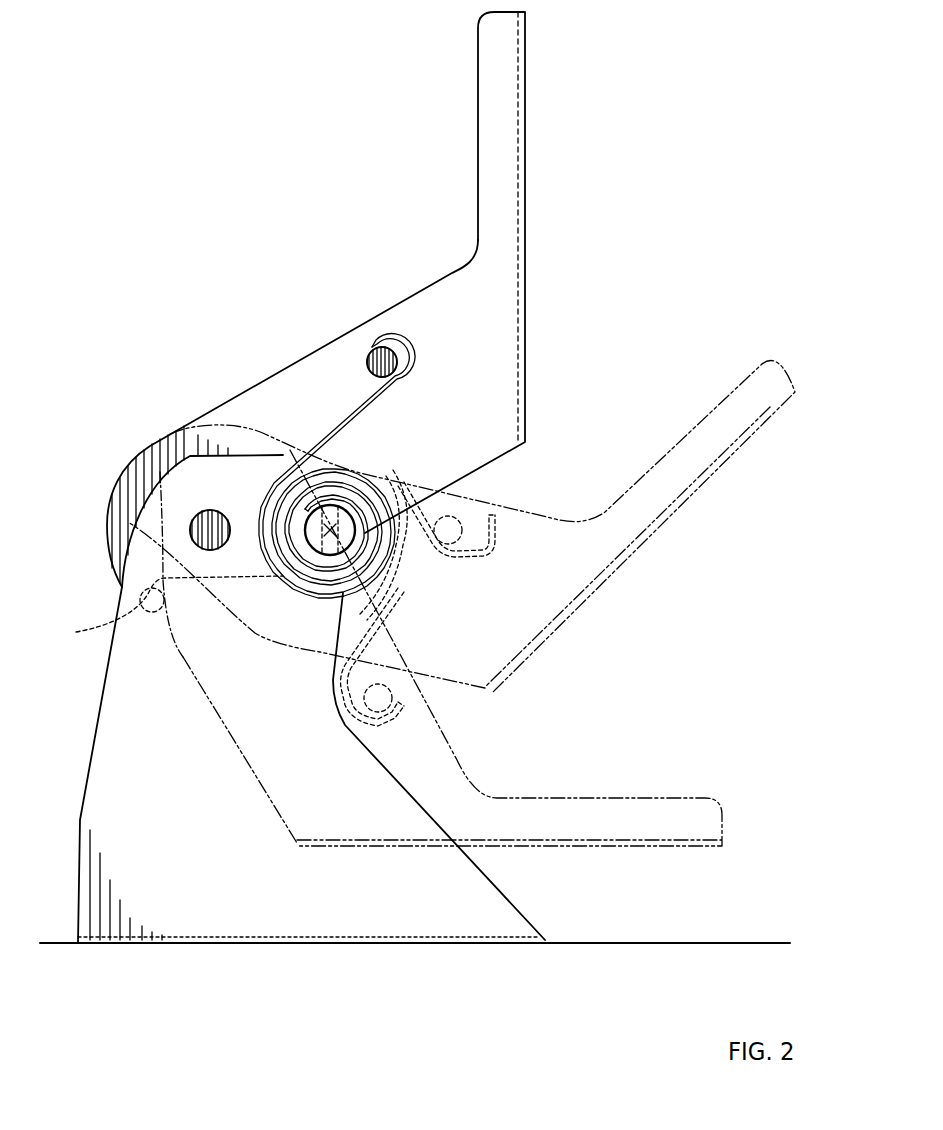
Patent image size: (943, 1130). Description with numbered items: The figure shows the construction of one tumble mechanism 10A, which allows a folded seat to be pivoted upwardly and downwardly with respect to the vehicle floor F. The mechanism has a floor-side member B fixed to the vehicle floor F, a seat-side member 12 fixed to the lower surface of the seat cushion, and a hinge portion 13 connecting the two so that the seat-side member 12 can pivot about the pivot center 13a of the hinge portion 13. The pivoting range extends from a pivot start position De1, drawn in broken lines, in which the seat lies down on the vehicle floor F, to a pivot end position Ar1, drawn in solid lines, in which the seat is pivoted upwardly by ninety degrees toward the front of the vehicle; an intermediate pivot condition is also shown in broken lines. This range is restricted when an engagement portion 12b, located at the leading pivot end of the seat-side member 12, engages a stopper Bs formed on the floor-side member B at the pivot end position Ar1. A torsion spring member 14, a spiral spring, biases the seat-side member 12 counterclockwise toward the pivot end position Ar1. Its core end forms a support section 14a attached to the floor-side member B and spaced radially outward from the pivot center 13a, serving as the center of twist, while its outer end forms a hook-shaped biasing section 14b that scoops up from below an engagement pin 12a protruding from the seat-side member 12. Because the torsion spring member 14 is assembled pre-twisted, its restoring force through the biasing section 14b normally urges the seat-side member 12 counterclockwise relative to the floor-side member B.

The tumble mechanism 10A is at (681, 130).
The seat-side member 12 is at (476, 130).
The engagement pin 12a is at (400, 347).
The engagement portion 12b is at (140, 597).
The hinge portion 13 is at (205, 506).
The pivot center 13a is at (189, 530).
The torsion spring member 14 is at (360, 472).
The support section 14a is at (402, 510).
The biasing section 14b is at (403, 367).
The pivot end position Ar1 is at (528, 128).
The floor-side member B is at (103, 682).
The stopper Bs is at (224, 559).
The pivot start position De1 is at (660, 797).
The vehicle floor F is at (566, 941).